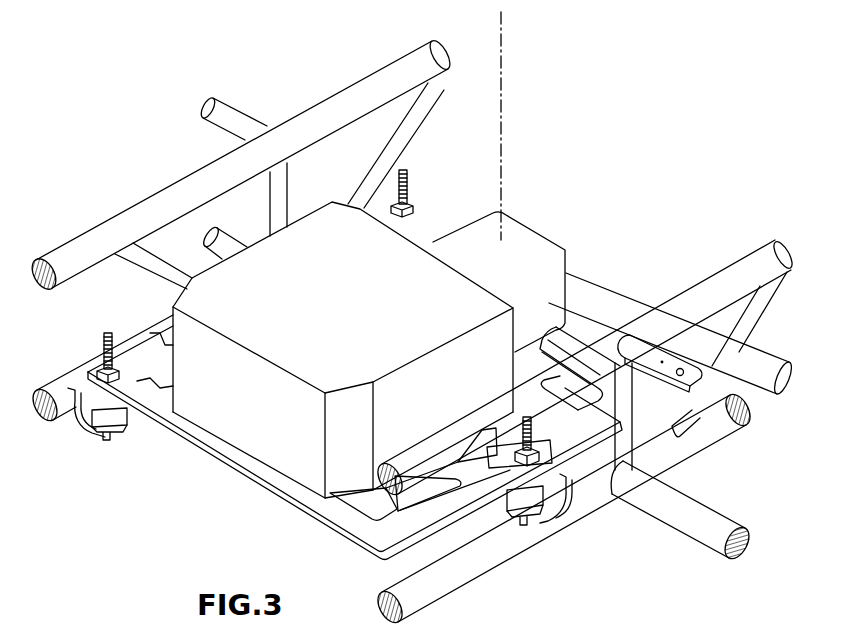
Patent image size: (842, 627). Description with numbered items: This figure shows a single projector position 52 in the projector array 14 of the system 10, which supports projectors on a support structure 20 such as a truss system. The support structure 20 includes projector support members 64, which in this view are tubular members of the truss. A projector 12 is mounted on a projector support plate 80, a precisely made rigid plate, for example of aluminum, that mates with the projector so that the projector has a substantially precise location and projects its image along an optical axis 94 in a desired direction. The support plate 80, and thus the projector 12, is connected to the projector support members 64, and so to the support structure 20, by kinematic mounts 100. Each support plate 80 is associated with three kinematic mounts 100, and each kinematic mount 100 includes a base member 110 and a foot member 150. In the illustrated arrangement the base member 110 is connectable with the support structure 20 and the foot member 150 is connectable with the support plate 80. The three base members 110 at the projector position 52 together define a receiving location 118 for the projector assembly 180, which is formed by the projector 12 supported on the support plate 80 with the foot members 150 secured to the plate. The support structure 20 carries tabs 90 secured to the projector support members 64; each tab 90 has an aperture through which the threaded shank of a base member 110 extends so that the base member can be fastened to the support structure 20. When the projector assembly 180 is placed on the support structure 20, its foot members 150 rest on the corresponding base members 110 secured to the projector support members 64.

The system 10 is at (590, 108).
The projector 12 is at (470, 297).
The projector array 14 is at (657, 150).
The support structure 20 is at (310, 120).
The projector position 52 is at (617, 126).
The projector support member 64 is at (152, 213).
The projector support plate 80 is at (358, 527).
The tab 90 is at (68, 413).
The optical axis 94 is at (501, 12).
The kinematic mount 100 is at (427, 149).
The base member 110 is at (110, 423).
The receiving location 118 is at (670, 193).
The foot member 150 is at (418, 205).
The projector assembly 180 is at (200, 484).